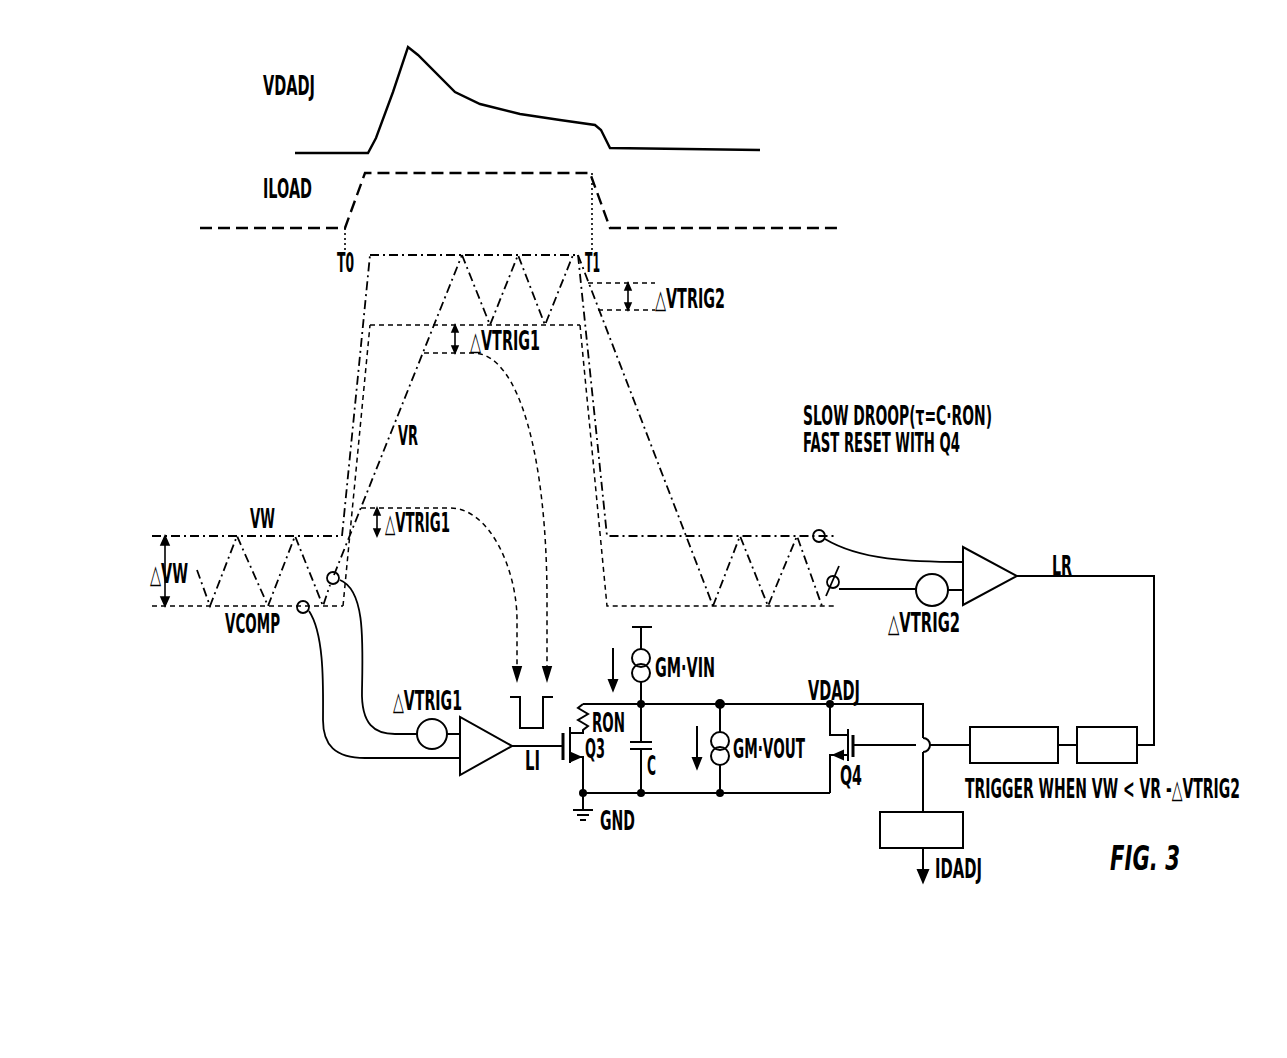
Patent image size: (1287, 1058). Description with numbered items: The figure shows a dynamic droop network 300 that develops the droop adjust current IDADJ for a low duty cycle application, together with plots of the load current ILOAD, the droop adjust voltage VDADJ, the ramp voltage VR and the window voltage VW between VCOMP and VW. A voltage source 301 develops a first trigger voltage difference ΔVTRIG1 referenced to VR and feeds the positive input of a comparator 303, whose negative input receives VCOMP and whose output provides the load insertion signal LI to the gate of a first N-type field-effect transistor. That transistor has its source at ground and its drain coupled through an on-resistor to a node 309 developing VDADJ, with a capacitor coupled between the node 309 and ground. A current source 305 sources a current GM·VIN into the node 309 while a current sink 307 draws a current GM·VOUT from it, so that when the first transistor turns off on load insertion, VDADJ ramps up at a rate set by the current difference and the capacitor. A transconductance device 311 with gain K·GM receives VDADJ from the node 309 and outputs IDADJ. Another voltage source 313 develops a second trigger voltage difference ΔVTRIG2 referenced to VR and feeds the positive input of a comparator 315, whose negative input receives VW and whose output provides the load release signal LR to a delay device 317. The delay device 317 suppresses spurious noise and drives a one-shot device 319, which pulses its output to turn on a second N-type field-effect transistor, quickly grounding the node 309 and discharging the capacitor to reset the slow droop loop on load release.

The dynamic droop network 300 is at (1107, 527).
The voltage source 301 is at (428, 749).
The comparator 303 is at (472, 767).
The current source 305 is at (646, 665).
The current sink 307 is at (725, 748).
The node 309 is at (720, 692).
The transconductance device 311 is at (965, 822).
The voltage source 313 is at (930, 573).
The comparator 315 is at (1000, 561).
The delay device 317 is at (1098, 727).
The 1-shot device 319 is at (994, 727).